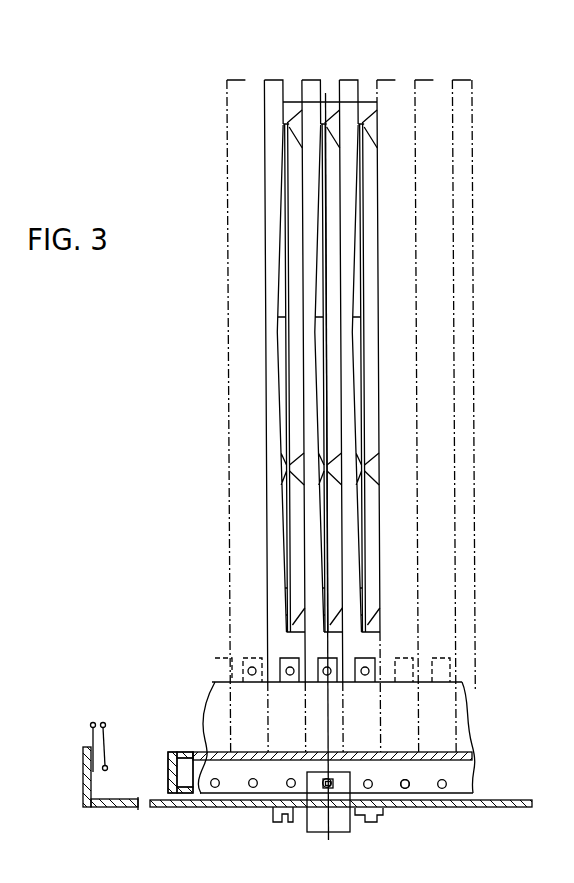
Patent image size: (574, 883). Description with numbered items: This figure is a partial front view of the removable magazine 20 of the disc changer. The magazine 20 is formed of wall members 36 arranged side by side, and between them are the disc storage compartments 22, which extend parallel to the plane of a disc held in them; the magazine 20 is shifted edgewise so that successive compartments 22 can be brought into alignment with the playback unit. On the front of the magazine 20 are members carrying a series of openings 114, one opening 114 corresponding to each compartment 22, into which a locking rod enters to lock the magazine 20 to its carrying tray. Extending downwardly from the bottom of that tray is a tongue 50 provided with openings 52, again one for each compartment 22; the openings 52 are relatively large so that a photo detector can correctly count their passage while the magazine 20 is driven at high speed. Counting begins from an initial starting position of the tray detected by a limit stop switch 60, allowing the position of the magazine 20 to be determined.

The magazine 20 is at (362, 52).
The disc storage compartments 22 is at (350, 180).
The wall members 36 is at (350, 90).
The openings 114 is at (324, 667).
The tongue 50 is at (465, 775).
The openings 52 is at (411, 789).
The limit stop switch 60 is at (95, 712).